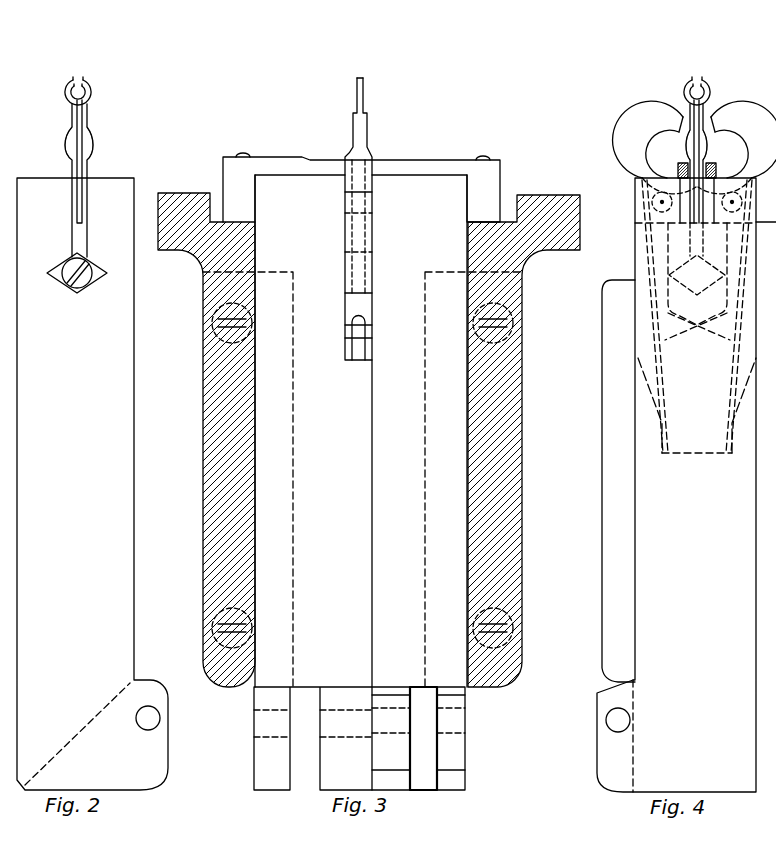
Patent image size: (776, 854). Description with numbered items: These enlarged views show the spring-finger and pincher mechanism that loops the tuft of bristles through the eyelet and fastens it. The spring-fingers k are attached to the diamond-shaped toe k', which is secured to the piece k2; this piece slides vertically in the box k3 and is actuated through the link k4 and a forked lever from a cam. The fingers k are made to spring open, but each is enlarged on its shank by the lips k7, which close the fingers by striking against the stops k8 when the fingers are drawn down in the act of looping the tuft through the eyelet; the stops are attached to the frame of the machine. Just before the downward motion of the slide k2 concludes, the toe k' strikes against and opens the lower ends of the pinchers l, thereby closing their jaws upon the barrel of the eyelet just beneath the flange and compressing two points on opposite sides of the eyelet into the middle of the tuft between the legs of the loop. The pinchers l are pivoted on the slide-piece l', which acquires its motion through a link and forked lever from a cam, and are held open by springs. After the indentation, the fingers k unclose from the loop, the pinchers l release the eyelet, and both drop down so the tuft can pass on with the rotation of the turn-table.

In FIG. 2, the spring-fingers k is at (79, 167).
In FIG. 3, the spring-fingers k is at (358, 426).
In FIG. 4, the spring-fingers k is at (697, 166).
In FIG. 2, the diamond-shaped toe k' is at (78, 273).
In FIG. 2, the slide piece k2 is at (92, 484).
In FIG. 3, the slide piece k2 is at (362, 531).
In FIG. 4, the slide piece k2 is at (686, 485).
In FIG. 3, the box k3 is at (369, 440).
In FIG. 4, the link k4 is at (697, 275).
In FIG. 2, the lips k7 is at (72, 143).
In FIG. 4, the lips k7 is at (698, 145).
In FIG. 4, the stops k8 is at (695, 168).
In FIG. 4, the pinchers l is at (694, 162).
In FIG. 3, the slide-piece l' is at (361, 420).